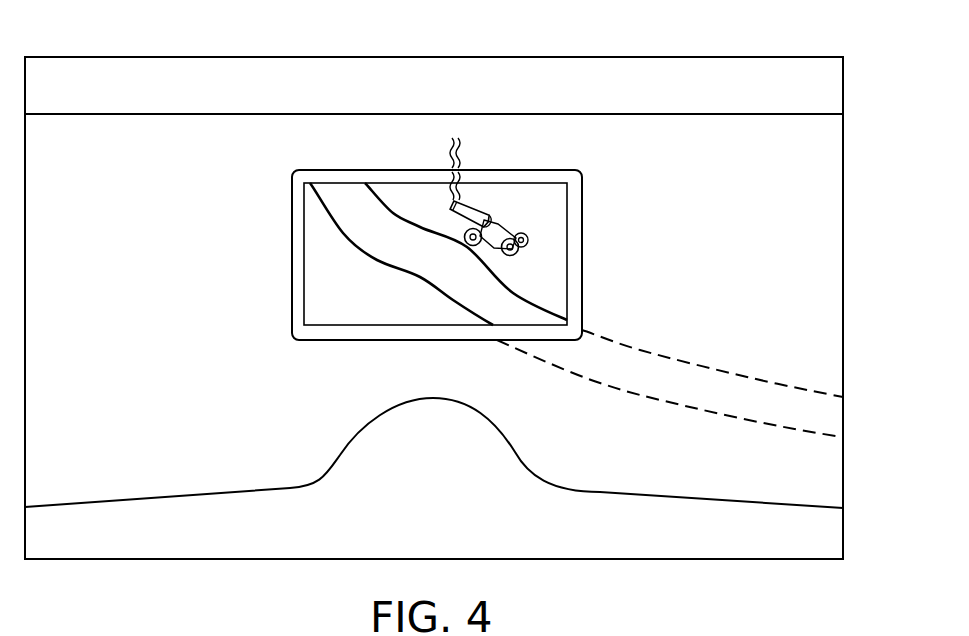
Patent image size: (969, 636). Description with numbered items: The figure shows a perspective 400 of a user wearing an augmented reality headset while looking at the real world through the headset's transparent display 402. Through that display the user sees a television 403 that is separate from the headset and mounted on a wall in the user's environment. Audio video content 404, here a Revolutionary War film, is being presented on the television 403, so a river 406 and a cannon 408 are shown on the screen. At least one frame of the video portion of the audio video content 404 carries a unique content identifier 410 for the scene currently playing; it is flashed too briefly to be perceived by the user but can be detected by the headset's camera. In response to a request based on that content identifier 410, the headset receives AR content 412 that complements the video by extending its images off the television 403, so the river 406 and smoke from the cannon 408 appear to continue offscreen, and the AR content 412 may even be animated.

The perspective 400 is at (730, 38).
The transparent display 402 is at (101, 484).
The television 403 is at (582, 207).
The audio video content 404 is at (313, 220).
The river 406 is at (418, 226).
The cannon 408 is at (530, 233).
The content identifier 410 is at (357, 320).
The AR content 412 is at (747, 376).